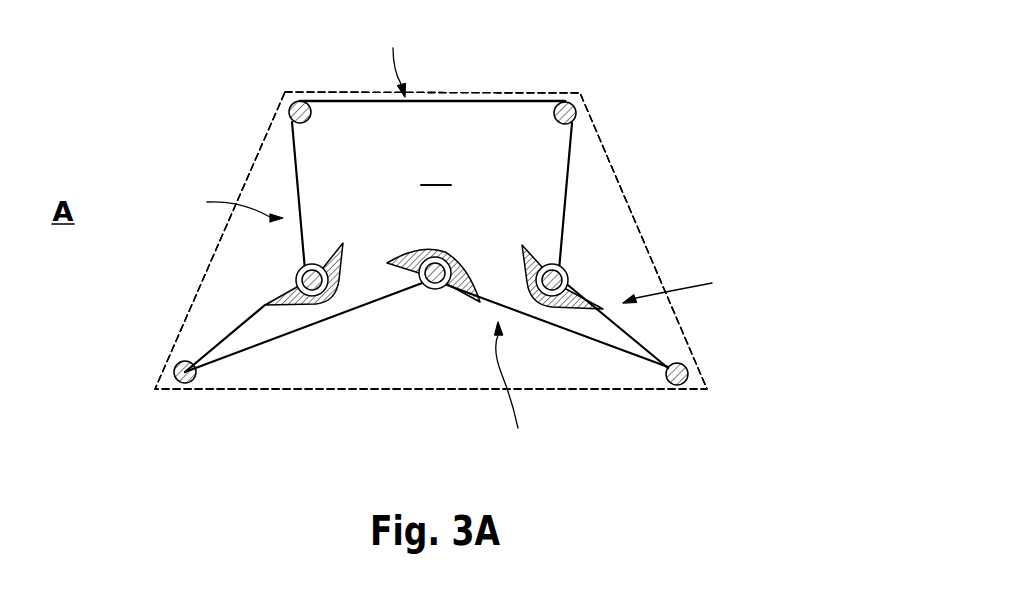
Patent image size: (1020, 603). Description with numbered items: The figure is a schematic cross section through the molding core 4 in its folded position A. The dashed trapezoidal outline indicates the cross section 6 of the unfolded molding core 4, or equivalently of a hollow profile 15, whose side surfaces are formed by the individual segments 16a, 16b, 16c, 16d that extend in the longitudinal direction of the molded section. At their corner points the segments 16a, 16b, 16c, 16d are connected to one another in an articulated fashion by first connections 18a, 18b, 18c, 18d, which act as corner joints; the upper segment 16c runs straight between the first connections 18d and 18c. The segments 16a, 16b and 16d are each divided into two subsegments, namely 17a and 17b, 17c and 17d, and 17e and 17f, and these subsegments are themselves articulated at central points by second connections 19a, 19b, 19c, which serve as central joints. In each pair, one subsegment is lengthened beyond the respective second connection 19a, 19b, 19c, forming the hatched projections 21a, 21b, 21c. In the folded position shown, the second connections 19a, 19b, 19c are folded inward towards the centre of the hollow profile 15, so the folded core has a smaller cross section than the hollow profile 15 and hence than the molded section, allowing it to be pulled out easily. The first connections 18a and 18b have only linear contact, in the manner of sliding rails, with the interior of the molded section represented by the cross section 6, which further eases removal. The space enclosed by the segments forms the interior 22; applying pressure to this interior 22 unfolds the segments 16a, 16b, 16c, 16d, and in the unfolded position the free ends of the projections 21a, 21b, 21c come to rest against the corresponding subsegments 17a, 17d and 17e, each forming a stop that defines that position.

The molding core 4 is at (226, 89).
The cross section 6 is at (485, 92).
The hollow profile 15 is at (431, 204).
The interior 22 is at (436, 170).
The segment 16a is at (519, 391).
The segment 16b is at (691, 282).
The segment 16c is at (393, 57).
The segment 16d is at (222, 204).
The subsegment 17a is at (316, 330).
The subsegment 17b is at (590, 348).
The subsegment 17c is at (633, 337).
The subsegment 17d is at (567, 190).
The subsegment 17e is at (293, 181).
The subsegment 17f is at (228, 332).
The first connection 18a is at (185, 384).
The first connection 18b is at (679, 386).
The first connection 18c is at (566, 102).
The first connection 18d is at (300, 101).
The second connection 19a is at (433, 286).
The second connection 19b is at (563, 272).
The second connection 19c is at (302, 280).
The projection 21a is at (428, 283).
The projection 21b is at (541, 252).
The projection 21c is at (330, 255).